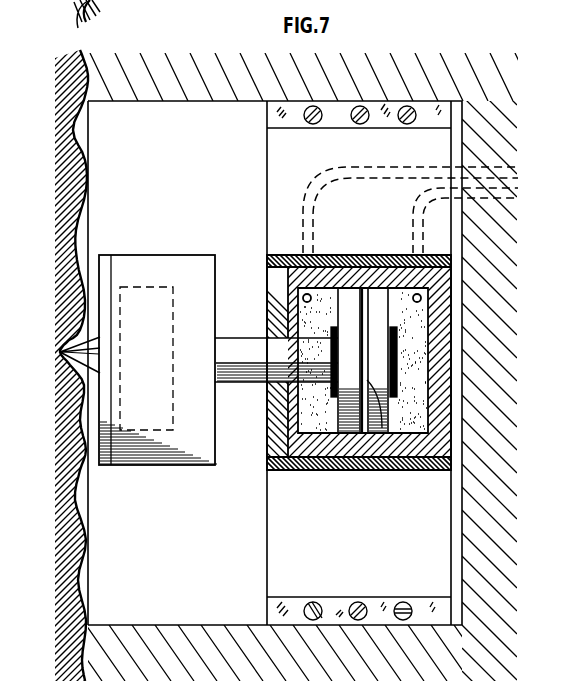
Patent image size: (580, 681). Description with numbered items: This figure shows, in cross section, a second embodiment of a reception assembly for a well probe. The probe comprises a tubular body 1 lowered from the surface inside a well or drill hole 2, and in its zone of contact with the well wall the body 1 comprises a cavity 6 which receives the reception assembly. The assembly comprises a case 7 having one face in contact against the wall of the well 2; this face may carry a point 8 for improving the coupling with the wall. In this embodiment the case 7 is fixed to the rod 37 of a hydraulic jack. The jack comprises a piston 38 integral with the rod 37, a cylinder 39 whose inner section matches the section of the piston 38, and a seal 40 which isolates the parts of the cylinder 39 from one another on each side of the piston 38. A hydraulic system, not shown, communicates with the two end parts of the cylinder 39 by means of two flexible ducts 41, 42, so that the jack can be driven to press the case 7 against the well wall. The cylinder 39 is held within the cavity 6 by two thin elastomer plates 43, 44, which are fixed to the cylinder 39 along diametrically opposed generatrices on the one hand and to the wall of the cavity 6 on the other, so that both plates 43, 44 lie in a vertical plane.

The tubular body 1 is at (135, 638).
The well or drill hole 2 is at (76, 137).
The cavity 6 is at (163, 160).
The case 7 is at (133, 262).
The point 8 is at (76, 349).
The rod 37 is at (237, 383).
The piston 38 is at (343, 425).
The cylinder 39 is at (313, 458).
The seal 40 is at (381, 420).
The flexible duct 41 is at (305, 203).
The flexible duct 42 is at (412, 231).
The thin elastomer plate 43 is at (267, 161).
The thin elastomer plate 44 is at (312, 542).